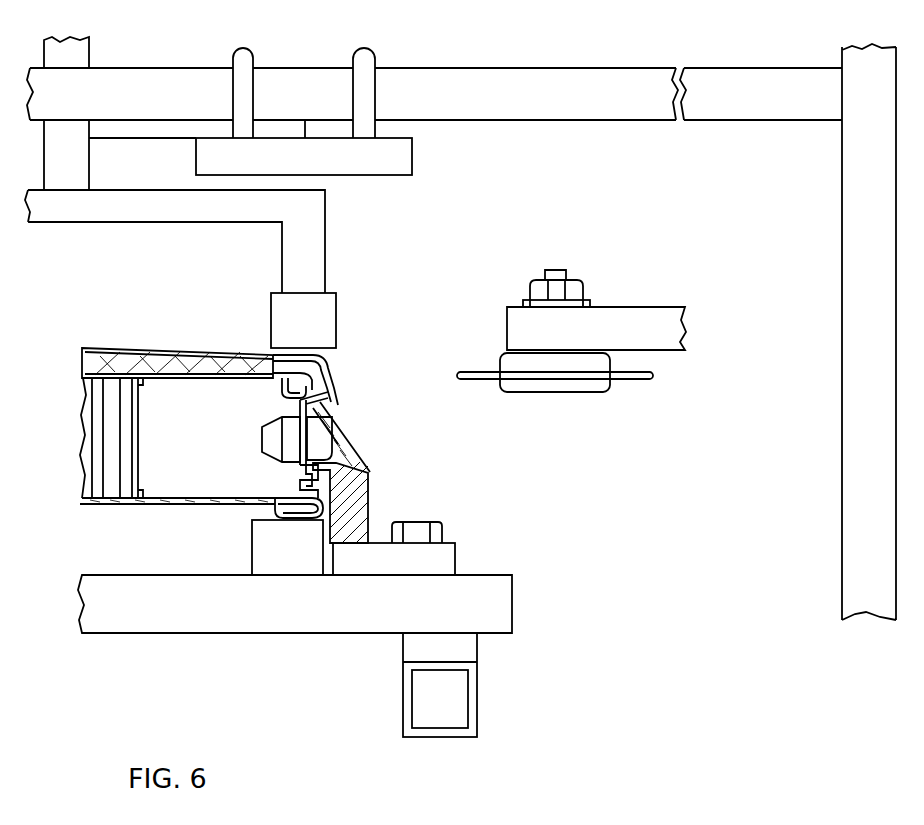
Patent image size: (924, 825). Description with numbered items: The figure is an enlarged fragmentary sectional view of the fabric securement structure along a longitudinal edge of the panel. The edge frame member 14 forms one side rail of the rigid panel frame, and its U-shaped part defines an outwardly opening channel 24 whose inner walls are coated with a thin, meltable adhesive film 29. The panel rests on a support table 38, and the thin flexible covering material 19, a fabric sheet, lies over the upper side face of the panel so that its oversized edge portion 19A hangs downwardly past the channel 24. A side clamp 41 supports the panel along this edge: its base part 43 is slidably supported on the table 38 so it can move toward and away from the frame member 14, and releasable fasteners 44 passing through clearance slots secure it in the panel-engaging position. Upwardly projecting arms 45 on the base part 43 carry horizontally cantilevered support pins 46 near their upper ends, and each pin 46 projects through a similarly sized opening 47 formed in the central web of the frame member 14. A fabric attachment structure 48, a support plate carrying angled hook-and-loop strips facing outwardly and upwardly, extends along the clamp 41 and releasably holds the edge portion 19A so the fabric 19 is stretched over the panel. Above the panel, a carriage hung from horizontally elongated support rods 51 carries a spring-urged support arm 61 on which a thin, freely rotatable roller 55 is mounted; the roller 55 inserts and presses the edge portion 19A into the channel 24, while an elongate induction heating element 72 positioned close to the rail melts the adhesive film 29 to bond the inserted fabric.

The edge frame member 14 is at (185, 470).
The flexible covering material 19 is at (165, 355).
The edge portion of fabric 19A is at (332, 400).
The channel 24 is at (330, 372).
The adhesive film 29 is at (290, 388).
The support table 38 is at (263, 617).
The side clamp 41 is at (447, 468).
The base part 43 is at (447, 562).
The releasable fastener 44 is at (418, 528).
The upwardly projecting arm 45 is at (357, 510).
The support pin 46 is at (290, 437).
The opening 47 is at (300, 463).
The fabric attachment structure 48 is at (357, 452).
The support rod 51 is at (507, 107).
The roller 55 is at (623, 380).
The support arm 61 is at (644, 325).
The electric heating element 72 is at (325, 313).